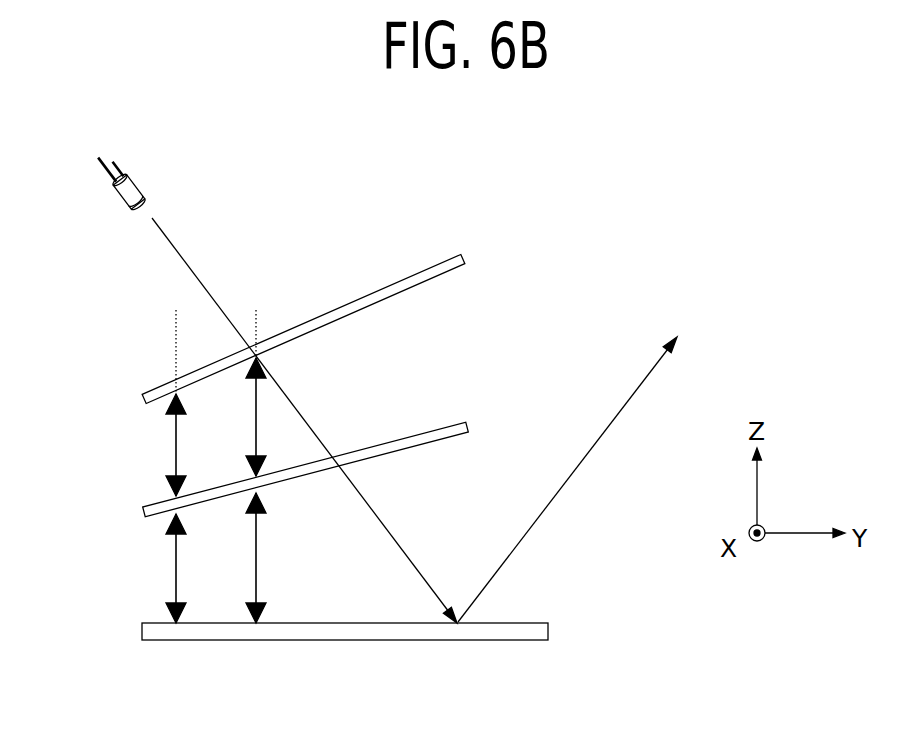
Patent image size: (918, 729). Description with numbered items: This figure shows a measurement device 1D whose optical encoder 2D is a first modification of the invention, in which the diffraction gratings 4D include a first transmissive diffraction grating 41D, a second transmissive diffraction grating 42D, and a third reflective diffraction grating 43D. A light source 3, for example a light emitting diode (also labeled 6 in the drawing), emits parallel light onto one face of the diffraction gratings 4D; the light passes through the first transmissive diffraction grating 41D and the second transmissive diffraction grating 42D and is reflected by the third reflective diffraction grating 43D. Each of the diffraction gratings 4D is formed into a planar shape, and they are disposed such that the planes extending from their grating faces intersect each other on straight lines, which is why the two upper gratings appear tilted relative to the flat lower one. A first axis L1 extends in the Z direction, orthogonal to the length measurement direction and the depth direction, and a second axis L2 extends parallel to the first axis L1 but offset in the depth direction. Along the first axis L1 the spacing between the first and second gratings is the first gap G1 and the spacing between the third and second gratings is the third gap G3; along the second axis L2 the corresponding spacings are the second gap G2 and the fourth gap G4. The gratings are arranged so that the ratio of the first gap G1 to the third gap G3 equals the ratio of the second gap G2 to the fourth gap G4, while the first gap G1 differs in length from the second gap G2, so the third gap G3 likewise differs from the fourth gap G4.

The measurement device 1D is at (304, 168).
The optical encoder 2D is at (269, 226).
The light source 3 is at (111, 190).
The light emitting element 6 is at (92, 182).
The diffraction gratings 4D is at (345, 461).
The first transmissive diffraction grating 41D is at (407, 273).
The second transmissive diffraction grating 42D is at (415, 428).
The third reflective diffraction grating 43D is at (240, 643).
The first axis L1 is at (255, 319).
The second axis L2 is at (175, 337).
The first gap G1 is at (274, 417).
The second gap G2 is at (190, 445).
The third gap G3 is at (273, 558).
The fourth gap G4 is at (194, 568).